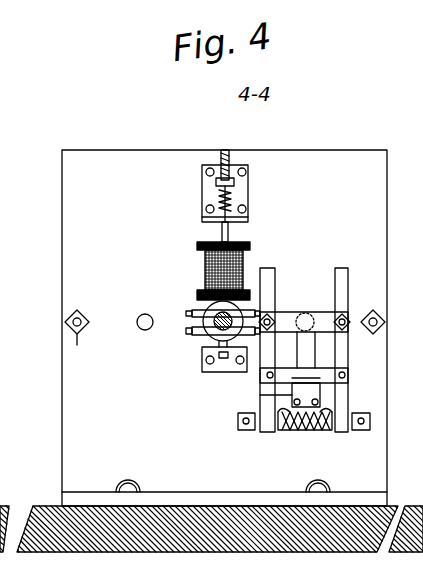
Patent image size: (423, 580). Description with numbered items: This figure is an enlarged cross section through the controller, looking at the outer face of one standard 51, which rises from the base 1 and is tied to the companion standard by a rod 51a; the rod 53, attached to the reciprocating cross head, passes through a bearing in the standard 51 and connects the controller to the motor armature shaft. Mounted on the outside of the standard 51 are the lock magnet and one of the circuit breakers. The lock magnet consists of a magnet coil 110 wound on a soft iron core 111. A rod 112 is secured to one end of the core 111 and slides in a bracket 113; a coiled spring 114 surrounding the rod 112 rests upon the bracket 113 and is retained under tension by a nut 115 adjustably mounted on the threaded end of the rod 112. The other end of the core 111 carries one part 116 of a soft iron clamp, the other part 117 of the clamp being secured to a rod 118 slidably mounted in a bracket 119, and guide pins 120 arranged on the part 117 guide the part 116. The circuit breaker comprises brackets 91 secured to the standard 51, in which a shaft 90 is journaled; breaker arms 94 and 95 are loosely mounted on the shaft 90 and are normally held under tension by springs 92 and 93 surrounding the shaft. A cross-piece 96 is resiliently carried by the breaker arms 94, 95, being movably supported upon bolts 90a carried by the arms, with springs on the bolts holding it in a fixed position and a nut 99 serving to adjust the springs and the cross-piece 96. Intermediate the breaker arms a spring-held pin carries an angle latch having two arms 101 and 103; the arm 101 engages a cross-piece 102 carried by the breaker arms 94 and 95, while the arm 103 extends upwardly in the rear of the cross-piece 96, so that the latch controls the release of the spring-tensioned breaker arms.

The base 1 is at (200, 535).
The standard 51 is at (224, 328).
The rod 51a is at (393, 322).
The rod 53 is at (215, 324).
The shaft 90 is at (265, 432).
The bolts 90a is at (308, 313).
The brackets 91 is at (244, 430).
The spring 92 is at (290, 430).
The spring 93 is at (312, 428).
The breaker arm 94 is at (268, 276).
The breaker arm 95 is at (345, 270).
The cross-piece 96 is at (325, 335).
The nut 99 is at (347, 315).
The arm of angle latch 101 is at (292, 384).
The cross-piece 102 is at (350, 378).
The arm of angle latch 103 is at (307, 350).
The magnet coil 110 is at (250, 260).
The soft iron core 111 is at (254, 244).
The rod 112 is at (222, 233).
The bracket 113 is at (250, 190).
The coiled spring 114 is at (220, 195).
The nut 115 is at (216, 182).
The clamp part 116 is at (205, 310).
The clamp part 117 is at (212, 326).
The rod 118 is at (224, 360).
The bracket 119 is at (203, 368).
The guide pins 120 is at (192, 320).